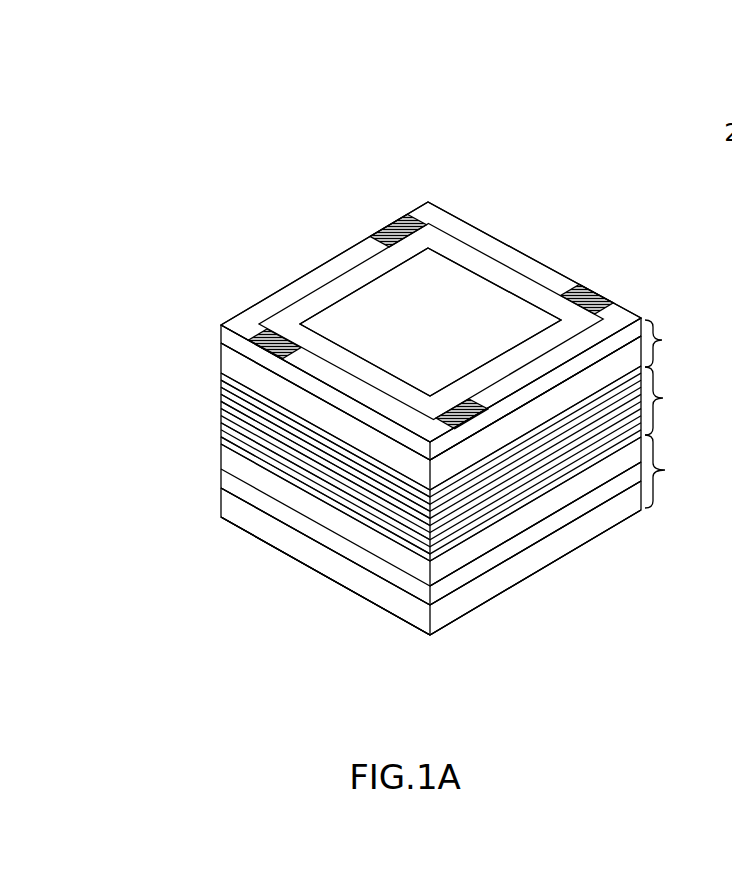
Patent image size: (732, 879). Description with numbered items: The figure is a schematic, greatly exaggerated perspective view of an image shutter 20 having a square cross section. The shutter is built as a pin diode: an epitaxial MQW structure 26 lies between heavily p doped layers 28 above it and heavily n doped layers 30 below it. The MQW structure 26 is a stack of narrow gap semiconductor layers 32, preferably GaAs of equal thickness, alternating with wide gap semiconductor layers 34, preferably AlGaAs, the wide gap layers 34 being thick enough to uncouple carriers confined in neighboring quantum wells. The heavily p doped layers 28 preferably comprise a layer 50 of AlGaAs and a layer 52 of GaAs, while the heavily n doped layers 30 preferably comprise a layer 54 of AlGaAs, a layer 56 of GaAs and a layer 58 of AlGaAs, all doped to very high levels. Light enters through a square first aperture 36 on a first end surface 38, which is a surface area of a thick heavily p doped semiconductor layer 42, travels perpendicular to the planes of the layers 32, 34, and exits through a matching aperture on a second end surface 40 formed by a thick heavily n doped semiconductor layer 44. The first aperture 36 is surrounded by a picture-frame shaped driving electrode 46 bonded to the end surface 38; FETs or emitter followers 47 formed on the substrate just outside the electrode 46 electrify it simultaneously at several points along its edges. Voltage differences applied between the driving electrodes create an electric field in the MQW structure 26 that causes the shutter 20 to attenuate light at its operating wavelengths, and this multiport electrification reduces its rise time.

The image shutter 20 is at (289, 133).
The epitaxial MQW structure 26 is at (665, 398).
The heavily p doped layers 28 is at (663, 340).
The heavily n doped layers 30 is at (667, 470).
The narrow gap semiconductor layers 32 is at (222, 435).
The wide gap semiconductor layers 34 is at (280, 411).
The first aperture 36 is at (478, 302).
The first end surface 38 is at (467, 283).
The second end surface 40 is at (323, 575).
The thick heavily p doped semiconductor layer 42 is at (363, 414).
The thick heavily n doped semiconductor layer 44 is at (398, 603).
The driving electrode 46 is at (447, 247).
The FETs or emitter followers 47 is at (387, 224).
The layer 50 is at (533, 420).
The layer 52 is at (533, 390).
The layer 54 is at (532, 513).
The layer 56 is at (530, 542).
The layer 58 is at (522, 570).